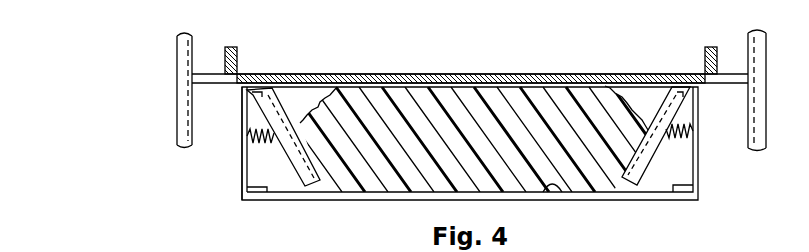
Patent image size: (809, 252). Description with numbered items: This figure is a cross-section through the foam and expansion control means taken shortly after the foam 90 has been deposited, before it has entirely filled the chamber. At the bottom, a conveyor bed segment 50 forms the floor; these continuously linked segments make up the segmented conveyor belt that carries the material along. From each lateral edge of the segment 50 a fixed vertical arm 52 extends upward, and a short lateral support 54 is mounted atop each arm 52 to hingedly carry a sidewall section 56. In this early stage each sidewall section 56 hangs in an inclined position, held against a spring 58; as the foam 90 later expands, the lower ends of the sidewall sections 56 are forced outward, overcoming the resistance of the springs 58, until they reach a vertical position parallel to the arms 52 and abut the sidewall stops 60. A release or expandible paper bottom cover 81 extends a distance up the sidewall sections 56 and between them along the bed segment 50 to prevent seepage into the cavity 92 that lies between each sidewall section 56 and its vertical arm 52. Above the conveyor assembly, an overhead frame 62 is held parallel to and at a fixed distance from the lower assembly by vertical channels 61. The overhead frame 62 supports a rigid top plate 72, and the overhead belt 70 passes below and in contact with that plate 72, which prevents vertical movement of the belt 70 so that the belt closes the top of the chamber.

The conveyor bed segment 50 is at (435, 158).
The vertical arm 52 is at (243, 175).
The short lateral support 54 is at (256, 92).
The sidewall section 56 is at (315, 179).
The spring 58 is at (247, 142).
The sidewall stop 60 is at (257, 192).
The vertical channel 61 is at (182, 117).
The overhead frame 62 is at (236, 60).
The overhead belt 70 is at (347, 75).
The rigid top plate 72 is at (550, 77).
The release or expandible paper bottom cover 81 is at (560, 188).
The foam 90 is at (437, 105).
The cavity 92 is at (263, 170).